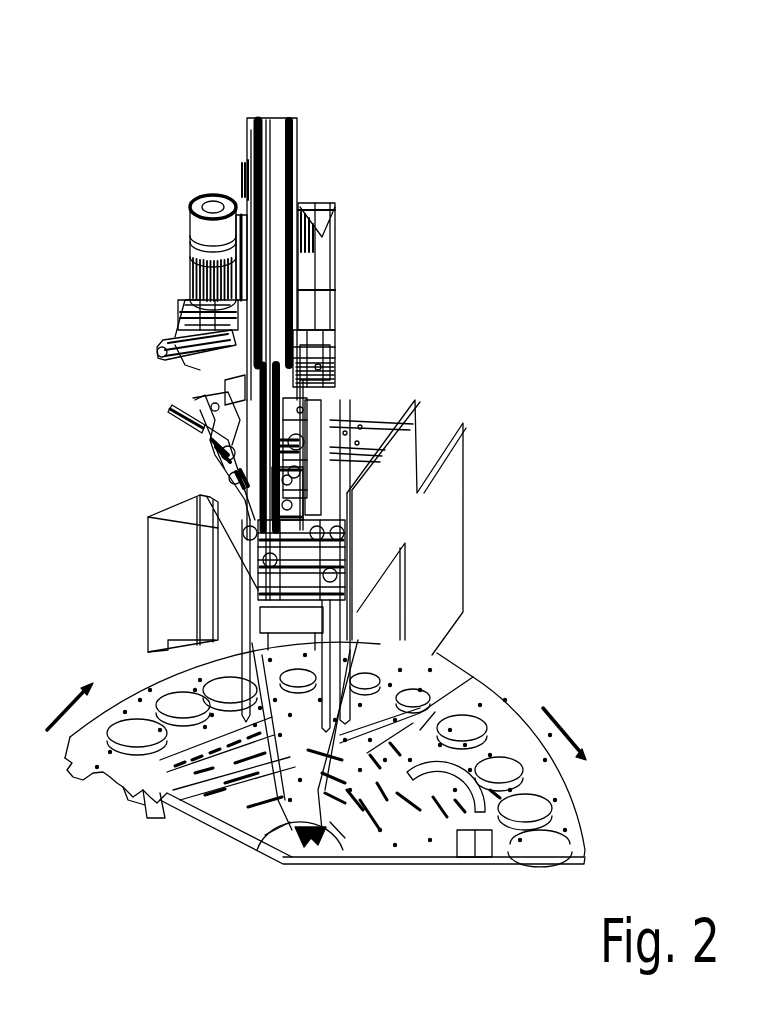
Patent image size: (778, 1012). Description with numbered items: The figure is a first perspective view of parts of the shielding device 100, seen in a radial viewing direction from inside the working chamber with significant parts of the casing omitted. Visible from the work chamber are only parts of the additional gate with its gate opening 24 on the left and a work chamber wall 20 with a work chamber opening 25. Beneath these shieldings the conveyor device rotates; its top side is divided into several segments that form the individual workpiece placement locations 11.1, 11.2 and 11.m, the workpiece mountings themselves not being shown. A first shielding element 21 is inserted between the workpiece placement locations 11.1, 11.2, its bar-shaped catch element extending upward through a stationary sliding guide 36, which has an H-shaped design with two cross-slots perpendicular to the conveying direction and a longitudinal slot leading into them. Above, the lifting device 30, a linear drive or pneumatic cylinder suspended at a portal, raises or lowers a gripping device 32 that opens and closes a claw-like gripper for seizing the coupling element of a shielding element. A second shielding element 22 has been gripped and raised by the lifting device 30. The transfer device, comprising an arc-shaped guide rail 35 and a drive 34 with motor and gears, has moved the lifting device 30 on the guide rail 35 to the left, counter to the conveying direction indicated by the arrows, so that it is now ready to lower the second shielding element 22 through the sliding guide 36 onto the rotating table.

The shielding device 100 is at (603, 128).
The lifting device 30 is at (280, 153).
The gripping device 32 is at (298, 217).
The drive 34 is at (153, 352).
The second shielding element 22 is at (207, 457).
The work chamber opening 25 is at (150, 517).
The sliding guide 36 is at (233, 577).
The gate opening 24 is at (217, 618).
The guide rail 35 is at (420, 423).
The work chamber wall 20 is at (430, 552).
The first shielding element 21 is at (277, 830).
The workpiece placement location 11.1 is at (330, 840).
The workpiece placement location 11.2 is at (222, 825).
The workpiece placement location 11.m is at (383, 847).